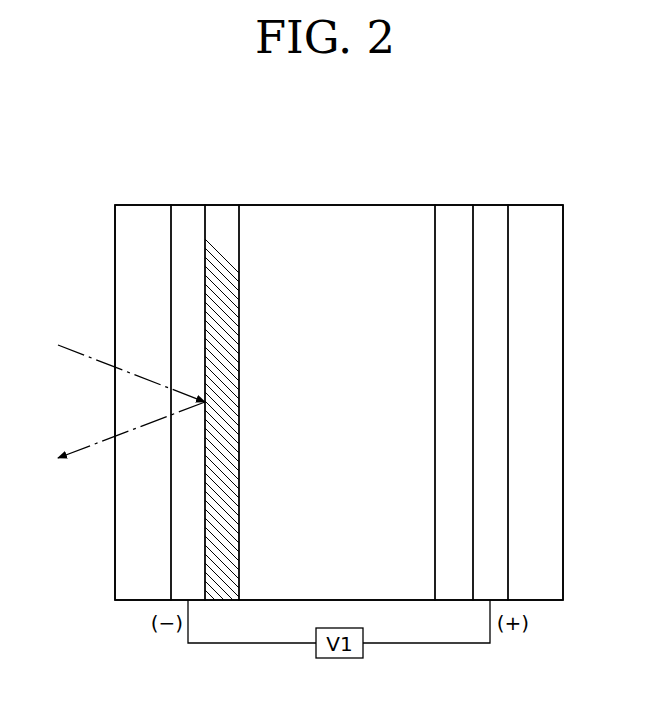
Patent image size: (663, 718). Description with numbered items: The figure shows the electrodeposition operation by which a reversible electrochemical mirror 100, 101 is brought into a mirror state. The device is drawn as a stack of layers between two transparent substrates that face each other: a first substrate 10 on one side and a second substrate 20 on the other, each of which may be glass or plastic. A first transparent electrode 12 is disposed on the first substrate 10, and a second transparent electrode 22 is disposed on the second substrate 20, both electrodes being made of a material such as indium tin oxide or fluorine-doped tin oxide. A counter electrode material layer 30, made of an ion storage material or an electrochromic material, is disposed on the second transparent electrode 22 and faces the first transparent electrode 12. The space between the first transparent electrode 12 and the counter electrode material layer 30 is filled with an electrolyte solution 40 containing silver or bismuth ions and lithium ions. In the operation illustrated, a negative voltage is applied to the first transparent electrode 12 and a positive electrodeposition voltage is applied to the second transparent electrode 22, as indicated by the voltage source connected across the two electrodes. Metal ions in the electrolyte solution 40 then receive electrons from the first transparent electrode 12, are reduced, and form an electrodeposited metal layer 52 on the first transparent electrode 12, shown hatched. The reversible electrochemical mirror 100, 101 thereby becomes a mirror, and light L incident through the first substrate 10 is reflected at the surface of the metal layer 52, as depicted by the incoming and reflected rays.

The reversible electrochemical mirror 100 is at (594, 106).
The reversible electrochemical mirror 101 is at (339, 402).
The first substrate 10 is at (143, 213).
The first transparent electrode 12 is at (189, 213).
The electrodeposited metal layer 52 is at (224, 213).
The electrolyte solution 40 is at (322, 215).
The counter electrode material layer 30 is at (452, 215).
The second transparent electrode 22 is at (492, 215).
The second substrate 20 is at (534, 215).
The light L is at (121, 397).